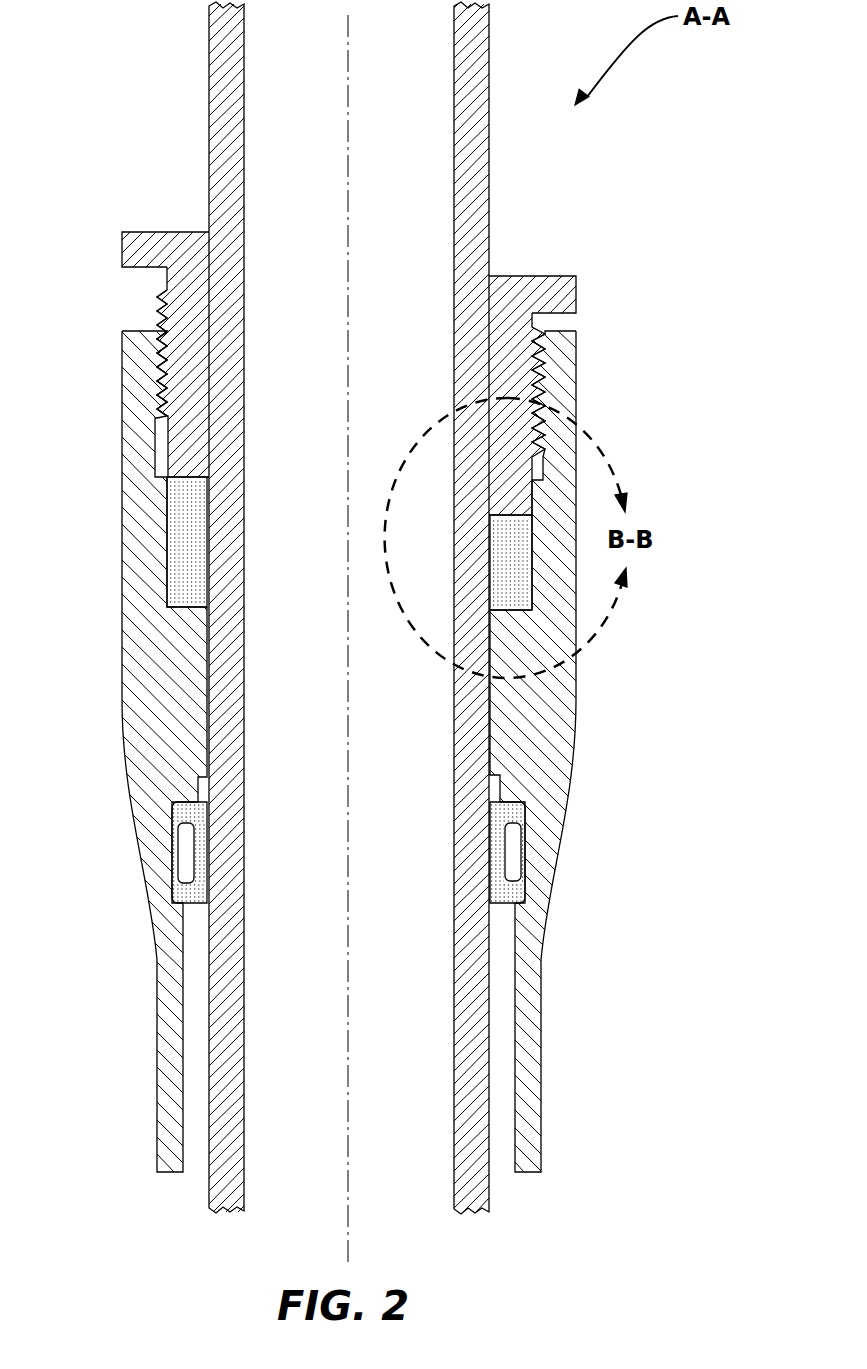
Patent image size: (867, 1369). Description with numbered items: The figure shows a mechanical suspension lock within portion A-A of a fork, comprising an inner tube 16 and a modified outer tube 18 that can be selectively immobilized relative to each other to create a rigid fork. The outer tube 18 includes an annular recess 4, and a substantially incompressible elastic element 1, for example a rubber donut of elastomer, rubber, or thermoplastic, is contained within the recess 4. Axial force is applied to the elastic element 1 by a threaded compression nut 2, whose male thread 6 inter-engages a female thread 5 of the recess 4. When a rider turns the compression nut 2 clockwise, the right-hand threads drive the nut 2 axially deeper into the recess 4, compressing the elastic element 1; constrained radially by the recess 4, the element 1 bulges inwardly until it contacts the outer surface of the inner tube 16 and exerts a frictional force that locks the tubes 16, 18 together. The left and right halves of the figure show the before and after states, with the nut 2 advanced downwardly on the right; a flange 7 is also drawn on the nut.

The elastic element 1 is at (180, 528).
The compression nut 2 is at (187, 303).
The annular recess 4 is at (183, 607).
The recess female thread 5 is at (158, 445).
The compression nut male thread 6 is at (158, 298).
The flange 7 is at (122, 246).
The inner tube 16 is at (212, 180).
The outer tube 18 is at (145, 640).